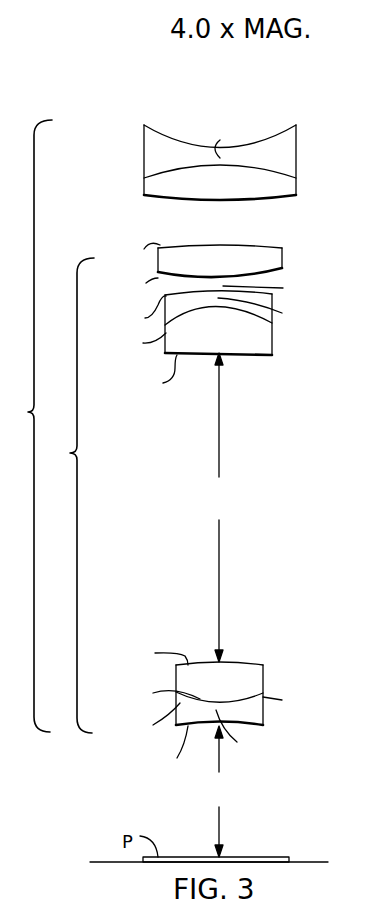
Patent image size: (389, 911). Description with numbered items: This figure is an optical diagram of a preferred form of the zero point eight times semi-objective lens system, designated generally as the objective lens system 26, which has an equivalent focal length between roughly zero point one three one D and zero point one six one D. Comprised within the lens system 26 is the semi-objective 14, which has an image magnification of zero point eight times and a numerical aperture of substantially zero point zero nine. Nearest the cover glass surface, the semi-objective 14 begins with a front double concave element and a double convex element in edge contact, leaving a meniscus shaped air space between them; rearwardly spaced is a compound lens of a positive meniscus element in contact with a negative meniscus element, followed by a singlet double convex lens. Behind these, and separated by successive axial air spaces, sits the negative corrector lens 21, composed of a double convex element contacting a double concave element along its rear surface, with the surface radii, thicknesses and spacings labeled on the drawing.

The negative corrector lens 21 is at (136, 160).
The semi-objective 14 is at (174, 539).
The objective lens system 26 is at (27, 426).